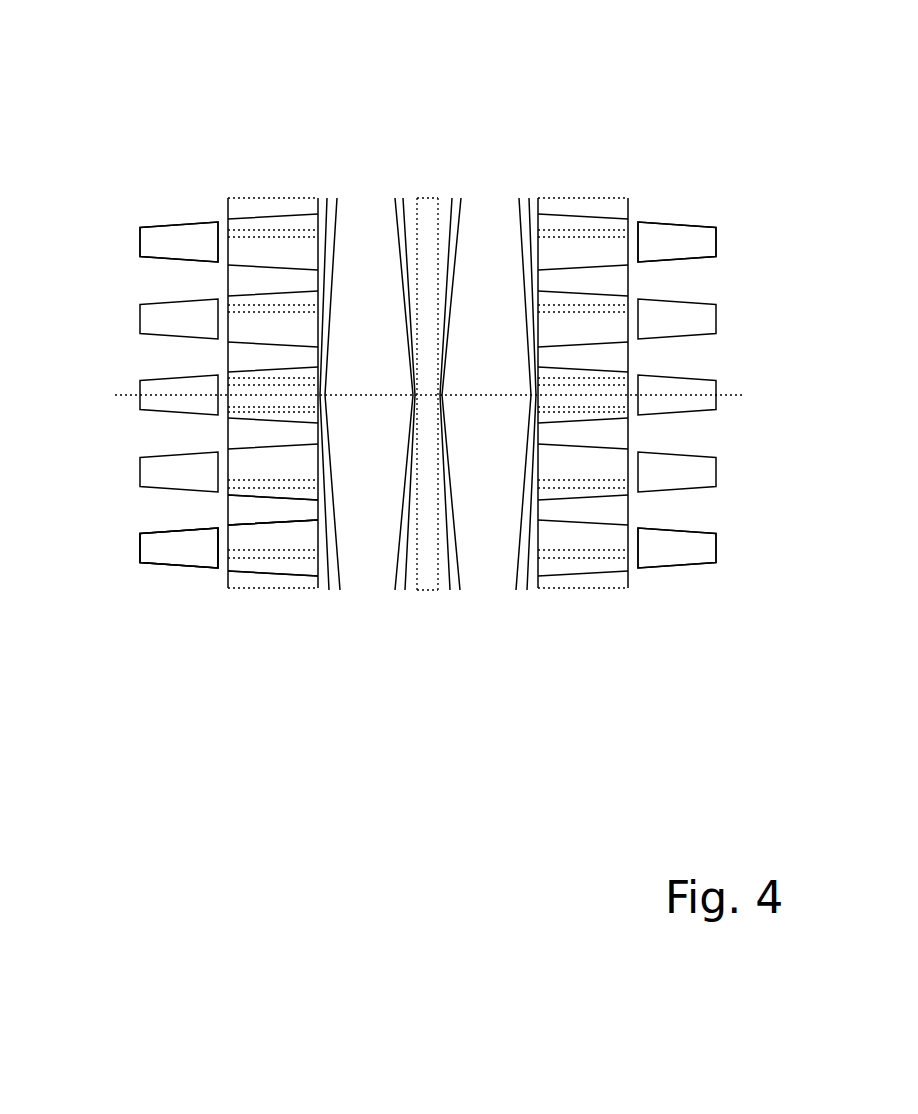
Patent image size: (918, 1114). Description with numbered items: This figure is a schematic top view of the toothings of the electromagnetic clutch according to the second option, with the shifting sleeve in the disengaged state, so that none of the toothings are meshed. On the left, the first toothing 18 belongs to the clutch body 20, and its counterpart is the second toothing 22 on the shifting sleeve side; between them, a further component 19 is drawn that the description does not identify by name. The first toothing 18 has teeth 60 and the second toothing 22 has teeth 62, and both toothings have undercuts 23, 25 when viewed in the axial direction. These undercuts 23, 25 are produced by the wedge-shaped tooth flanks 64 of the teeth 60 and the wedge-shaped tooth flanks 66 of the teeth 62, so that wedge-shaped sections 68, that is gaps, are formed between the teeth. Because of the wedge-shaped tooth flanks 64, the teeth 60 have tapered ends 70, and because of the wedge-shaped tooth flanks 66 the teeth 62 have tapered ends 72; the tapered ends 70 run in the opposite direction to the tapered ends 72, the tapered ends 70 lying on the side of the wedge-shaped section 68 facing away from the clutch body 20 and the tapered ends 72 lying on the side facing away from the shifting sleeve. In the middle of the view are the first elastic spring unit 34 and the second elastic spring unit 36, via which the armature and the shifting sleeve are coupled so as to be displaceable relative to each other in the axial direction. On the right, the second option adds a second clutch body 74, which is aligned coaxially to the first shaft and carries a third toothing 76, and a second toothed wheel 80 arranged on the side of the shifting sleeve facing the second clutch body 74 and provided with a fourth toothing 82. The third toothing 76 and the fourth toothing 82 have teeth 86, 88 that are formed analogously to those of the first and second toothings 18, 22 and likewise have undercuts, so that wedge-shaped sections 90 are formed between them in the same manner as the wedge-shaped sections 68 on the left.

The first toothing 18 is at (293, 148).
The stator tooth 19 is at (252, 213).
The clutch body 20 is at (163, 228).
The second toothing 22 is at (203, 160).
The undercut 23 is at (310, 217).
The undercut 25 is at (147, 218).
The first elastic spring unit 34 is at (383, 188).
The second elastic spring unit 36 is at (493, 188).
The teeth 60 is at (257, 515).
The teeth 62 is at (182, 548).
The wedge-shaped tooth flanks 64 is at (242, 527).
The wedge-shaped tooth flanks 66 is at (180, 530).
The wedge-shaped sections 68 is at (255, 493).
The tapered ends 70 is at (310, 527).
The tapered ends 72 is at (143, 568).
The second clutch body 74 is at (680, 225).
The third toothing 76 is at (707, 163).
The second toothed wheel 80 is at (587, 212).
The fourth toothing 82 is at (613, 148).
The teeth 86 is at (600, 510).
The teeth 88 is at (678, 547).
The wedge-shaped sections 90 is at (585, 490).